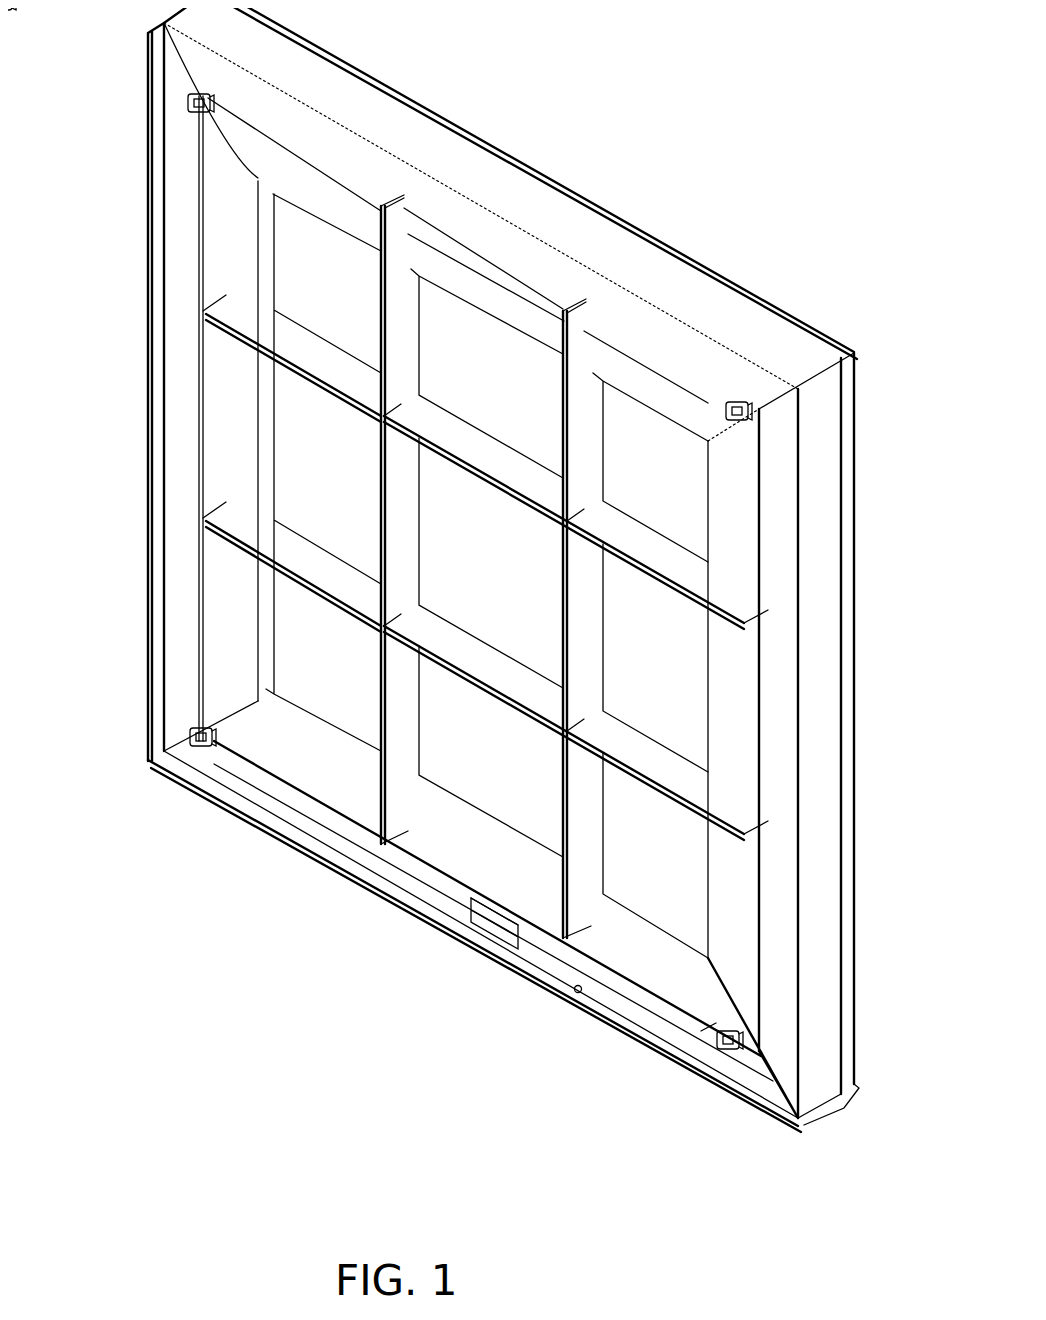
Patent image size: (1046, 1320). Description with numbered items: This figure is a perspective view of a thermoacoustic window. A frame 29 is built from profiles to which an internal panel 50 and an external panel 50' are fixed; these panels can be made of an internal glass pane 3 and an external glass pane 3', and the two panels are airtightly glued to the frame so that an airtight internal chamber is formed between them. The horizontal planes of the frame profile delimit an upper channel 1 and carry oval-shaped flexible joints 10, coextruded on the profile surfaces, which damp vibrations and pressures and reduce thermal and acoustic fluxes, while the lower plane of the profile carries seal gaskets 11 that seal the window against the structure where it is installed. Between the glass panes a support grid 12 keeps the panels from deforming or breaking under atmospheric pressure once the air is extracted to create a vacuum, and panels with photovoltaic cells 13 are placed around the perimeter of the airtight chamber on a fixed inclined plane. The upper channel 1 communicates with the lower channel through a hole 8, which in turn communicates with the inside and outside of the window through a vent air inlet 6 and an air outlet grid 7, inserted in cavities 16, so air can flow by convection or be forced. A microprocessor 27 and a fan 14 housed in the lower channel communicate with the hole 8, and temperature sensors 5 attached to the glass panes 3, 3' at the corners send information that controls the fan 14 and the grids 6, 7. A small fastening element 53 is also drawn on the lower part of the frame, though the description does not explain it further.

The upper channel 1 is at (783, 1047).
The frame 29 is at (628, 226).
The air outlet grid 7 is at (538, 212).
The panels with photovoltaic cells 13 is at (235, 394).
The support grid 12 is at (625, 700).
The internal panel 50 is at (415, 470).
The external panel 50' is at (421, 671).
The internal glass pane 3 is at (339, 566).
The external glass pane 3' is at (159, 486).
The temperature sensors 5 is at (187, 110).
The microprocessor 27 is at (330, 792).
The vent air inlet 6 is at (500, 952).
The fan 14 is at (463, 870).
The hole 8 is at (463, 907).
The fastener 53 is at (575, 992).
The cavities 16 is at (673, 1035).
The flexible joints 10 is at (820, 1107).
The seal gaskets 11 is at (840, 1107).